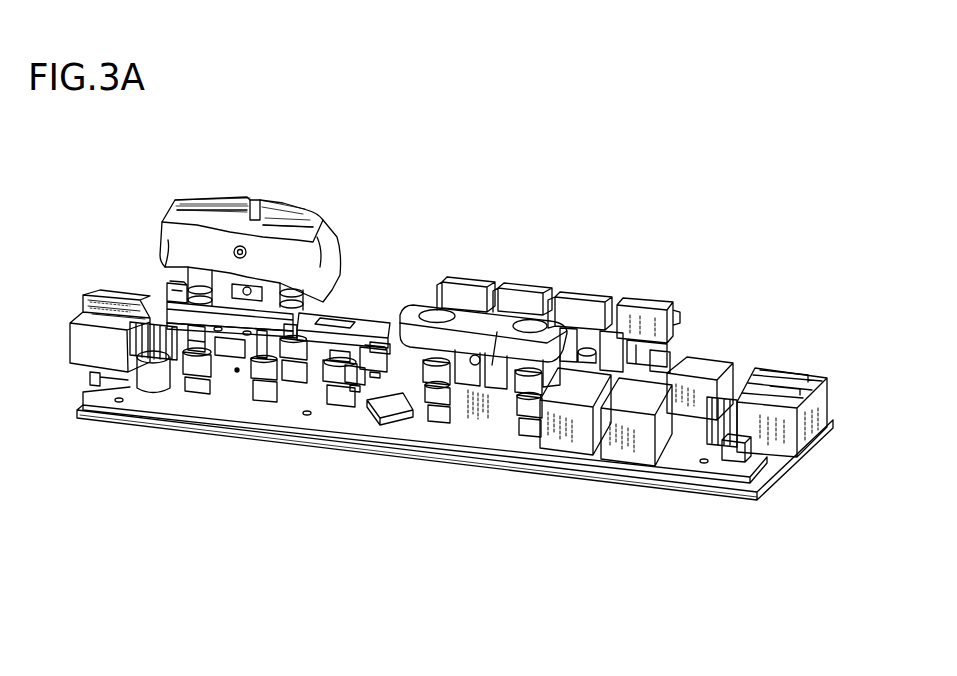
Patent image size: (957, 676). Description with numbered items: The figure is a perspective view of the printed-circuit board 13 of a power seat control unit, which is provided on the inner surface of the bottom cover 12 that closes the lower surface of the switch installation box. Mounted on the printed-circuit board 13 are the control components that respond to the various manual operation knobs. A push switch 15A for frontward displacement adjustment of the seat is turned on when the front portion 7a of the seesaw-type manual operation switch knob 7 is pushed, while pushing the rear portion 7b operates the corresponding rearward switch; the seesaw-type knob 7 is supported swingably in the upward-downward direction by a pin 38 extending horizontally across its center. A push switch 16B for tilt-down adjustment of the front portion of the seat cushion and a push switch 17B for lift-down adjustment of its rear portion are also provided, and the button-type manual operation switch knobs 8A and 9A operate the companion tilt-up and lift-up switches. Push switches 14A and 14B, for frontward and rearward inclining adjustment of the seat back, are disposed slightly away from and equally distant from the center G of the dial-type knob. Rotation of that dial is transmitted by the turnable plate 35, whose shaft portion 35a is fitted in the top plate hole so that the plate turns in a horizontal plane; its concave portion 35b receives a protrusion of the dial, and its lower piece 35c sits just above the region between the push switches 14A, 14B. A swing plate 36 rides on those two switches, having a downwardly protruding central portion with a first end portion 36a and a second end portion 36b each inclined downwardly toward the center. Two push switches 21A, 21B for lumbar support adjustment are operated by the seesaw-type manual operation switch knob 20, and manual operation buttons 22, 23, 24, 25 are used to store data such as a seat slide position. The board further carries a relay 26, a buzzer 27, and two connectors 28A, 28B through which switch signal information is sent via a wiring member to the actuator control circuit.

The seesaw-type manual operation switch knob 7 is at (167, 245).
The front portion 7a is at (297, 223).
The rear portion 7b is at (187, 213).
The button-type manual operation switch knob 8A is at (282, 207).
The button-type manual operation switch knob 9A is at (205, 198).
The bottom cover 12 is at (727, 490).
The printed-circuit board 13 is at (230, 400).
The push switch 14A is at (337, 403).
The push switch 14B is at (387, 347).
The push switch 15A is at (288, 378).
The push switch 16B is at (268, 397).
The push switch 17B is at (190, 387).
The seesaw-type manual operation switch knob 20 is at (490, 352).
The push switch 21A is at (530, 428).
The push switch 21B is at (435, 407).
The manual operation button 22 is at (630, 298).
The manual operation button 23 is at (573, 293).
The manual operation button 24 is at (517, 287).
The manual operation button 25 is at (457, 277).
The relay 26 is at (635, 438).
The buzzer 27 is at (387, 410).
The connector 28A is at (73, 352).
The connector 28B is at (773, 373).
The turnable plate 35 is at (333, 315).
The shaft portion 35a is at (240, 288).
The concave portion 35b is at (173, 283).
The lower piece 35c is at (362, 318).
The swing plate 36 is at (355, 385).
The first end portion 36a is at (330, 340).
The second end portion 36b is at (378, 342).
The pin 38 is at (240, 248).
The center G is at (237, 372).